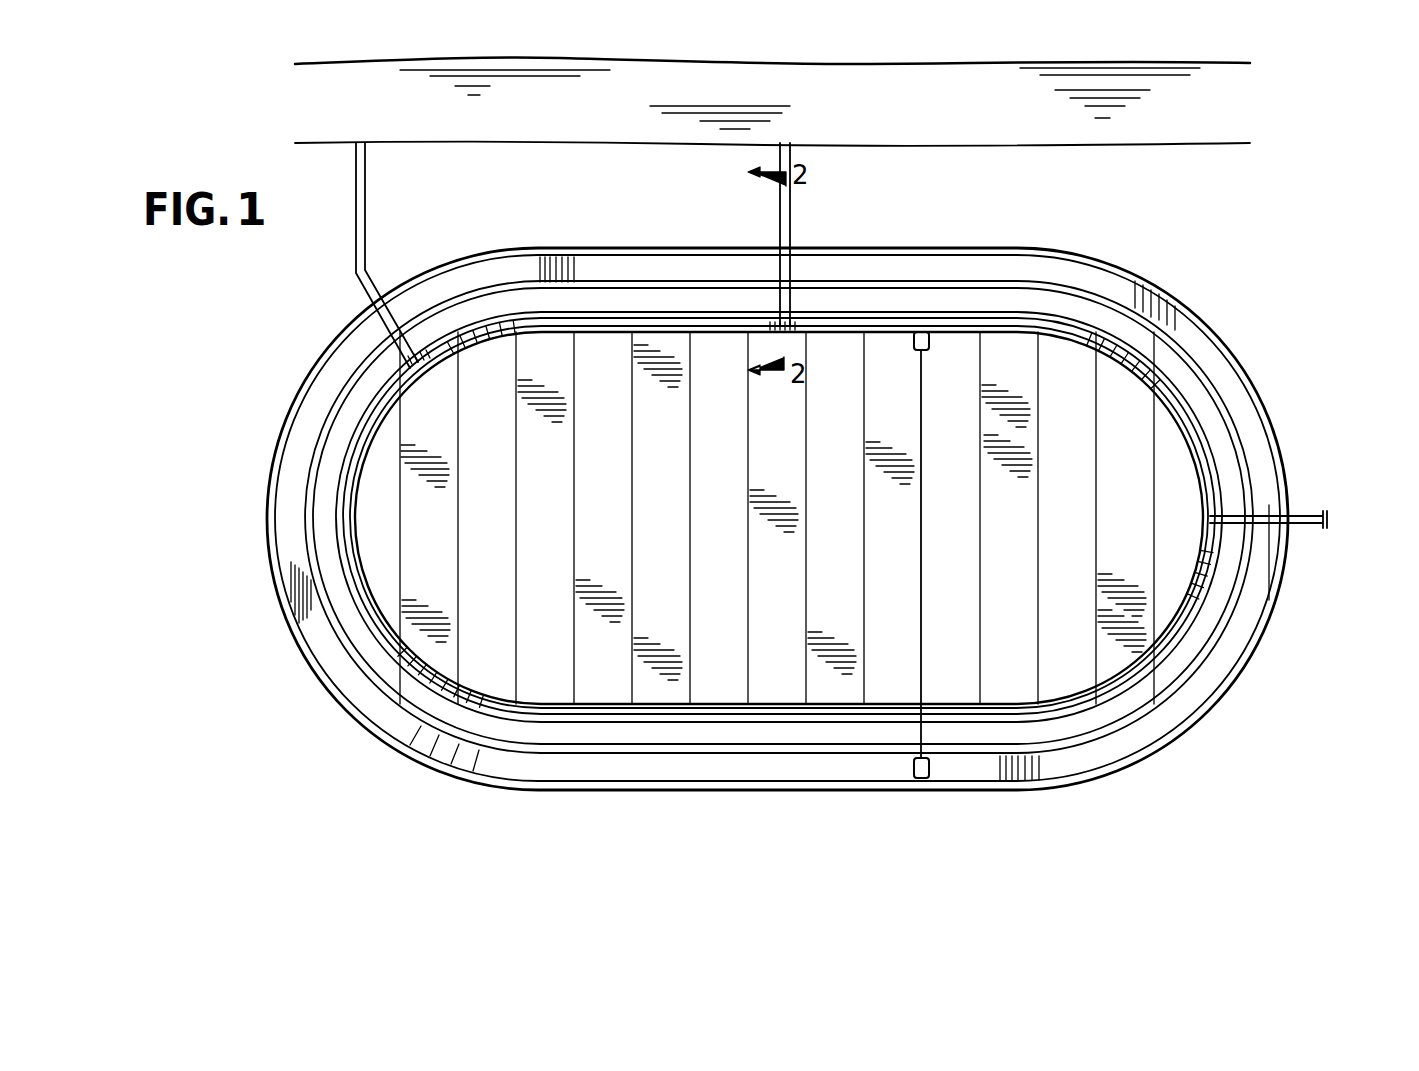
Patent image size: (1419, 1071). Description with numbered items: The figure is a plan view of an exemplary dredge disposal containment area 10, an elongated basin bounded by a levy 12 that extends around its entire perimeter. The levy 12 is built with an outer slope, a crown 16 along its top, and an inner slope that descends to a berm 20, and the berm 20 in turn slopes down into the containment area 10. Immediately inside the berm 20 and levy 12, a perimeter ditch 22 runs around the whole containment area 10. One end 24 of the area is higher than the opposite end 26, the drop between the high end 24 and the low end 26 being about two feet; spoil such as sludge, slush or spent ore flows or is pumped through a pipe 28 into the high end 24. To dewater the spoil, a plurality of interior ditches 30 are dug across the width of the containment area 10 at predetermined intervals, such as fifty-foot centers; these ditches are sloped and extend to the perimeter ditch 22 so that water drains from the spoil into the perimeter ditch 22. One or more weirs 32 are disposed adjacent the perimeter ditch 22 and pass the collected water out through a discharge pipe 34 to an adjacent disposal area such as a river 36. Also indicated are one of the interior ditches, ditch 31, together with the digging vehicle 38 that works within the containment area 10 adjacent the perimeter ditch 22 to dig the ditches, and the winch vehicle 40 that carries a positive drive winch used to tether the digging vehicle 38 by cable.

The containment area 10 is at (282, 405).
The levy 12 is at (292, 463).
The crown 16 is at (1264, 563).
The berm 20 is at (322, 490).
The perimeter ditch 22 is at (1172, 637).
The high end 24 is at (1187, 480).
The low end 26 is at (360, 528).
The pipe 28 is at (1320, 510).
The interior ditches 30 is at (573, 630).
The ditch 31 is at (923, 392).
The weirs 32 is at (412, 366).
The discharge pipe 34 is at (790, 222).
The river 36 is at (912, 111).
The digging vehicle 38 is at (928, 333).
The winch vehicle 40 is at (921, 778).